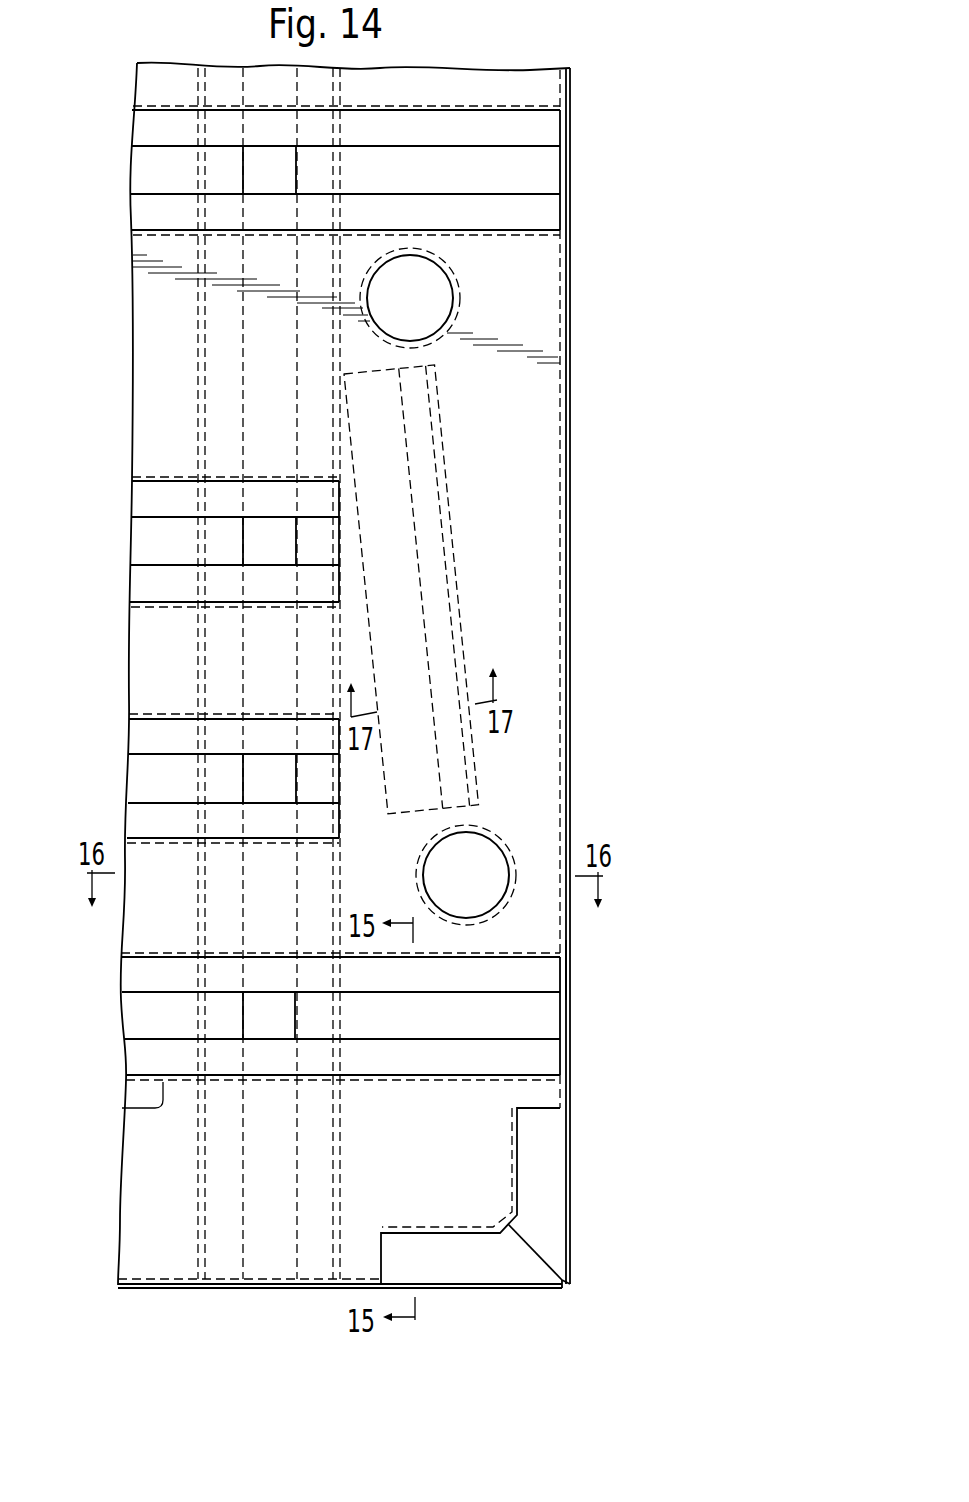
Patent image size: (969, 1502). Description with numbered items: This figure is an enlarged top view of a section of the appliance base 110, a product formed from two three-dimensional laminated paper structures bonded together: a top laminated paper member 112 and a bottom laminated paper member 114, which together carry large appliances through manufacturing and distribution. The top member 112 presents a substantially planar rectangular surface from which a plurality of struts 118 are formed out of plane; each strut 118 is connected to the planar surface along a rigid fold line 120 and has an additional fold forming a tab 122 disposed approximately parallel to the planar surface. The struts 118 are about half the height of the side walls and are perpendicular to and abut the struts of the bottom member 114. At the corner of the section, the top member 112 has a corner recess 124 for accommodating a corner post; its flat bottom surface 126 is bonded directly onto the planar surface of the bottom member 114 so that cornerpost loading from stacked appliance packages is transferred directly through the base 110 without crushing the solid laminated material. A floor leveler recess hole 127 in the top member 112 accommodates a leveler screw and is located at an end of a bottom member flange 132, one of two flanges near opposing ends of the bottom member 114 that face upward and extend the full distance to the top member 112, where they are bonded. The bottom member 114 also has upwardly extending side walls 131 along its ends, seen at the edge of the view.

The appliance base 110 is at (580, 1294).
The top laminated paper member 112 is at (533, 545).
The bottom laminated paper member 114 is at (570, 678).
The strut 118 is at (396, 1062).
The rigid fold line 120 is at (122, 1108).
The tab 122 is at (147, 1062).
The corner recess 124 is at (488, 1265).
The bottom surface 126 is at (550, 1180).
The floor leveler recess hole 127 is at (485, 853).
The side wall 131 is at (570, 967).
The flange 132 is at (427, 433).